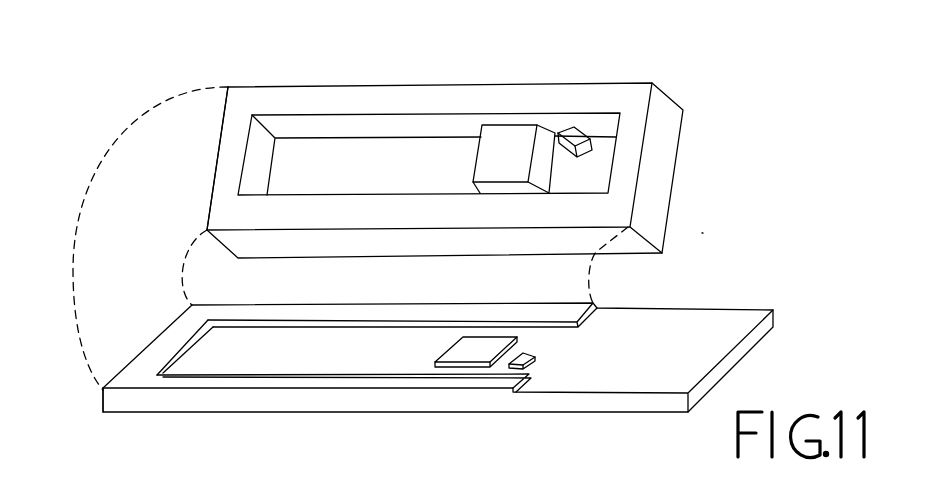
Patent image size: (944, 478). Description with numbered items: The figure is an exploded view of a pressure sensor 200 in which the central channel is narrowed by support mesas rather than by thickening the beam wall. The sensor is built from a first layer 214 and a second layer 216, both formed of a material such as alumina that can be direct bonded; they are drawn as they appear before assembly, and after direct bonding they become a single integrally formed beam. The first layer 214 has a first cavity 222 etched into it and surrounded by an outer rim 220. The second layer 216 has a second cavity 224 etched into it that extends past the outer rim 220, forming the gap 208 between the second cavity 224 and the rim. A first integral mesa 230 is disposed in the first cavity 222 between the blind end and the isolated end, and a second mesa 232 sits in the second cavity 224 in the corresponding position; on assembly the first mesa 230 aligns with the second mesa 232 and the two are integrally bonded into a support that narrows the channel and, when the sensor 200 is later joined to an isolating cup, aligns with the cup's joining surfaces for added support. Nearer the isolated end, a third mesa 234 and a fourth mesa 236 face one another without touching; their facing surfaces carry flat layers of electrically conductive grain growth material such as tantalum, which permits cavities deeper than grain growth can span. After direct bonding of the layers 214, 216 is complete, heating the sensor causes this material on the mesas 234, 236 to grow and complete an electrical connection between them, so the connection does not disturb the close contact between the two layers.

The pressure sensor 200 is at (722, 234).
The gap 208 is at (568, 345).
The first layer 214 is at (219, 156).
The second layer 216 is at (103, 401).
The outer rim 220 is at (294, 99).
The first cavity 222 is at (398, 175).
The second cavity 224 is at (302, 359).
The first integral mesa 230 is at (498, 146).
The second mesa 232 is at (468, 350).
The third mesa 234 is at (567, 131).
The fourth mesa 236 is at (532, 358).